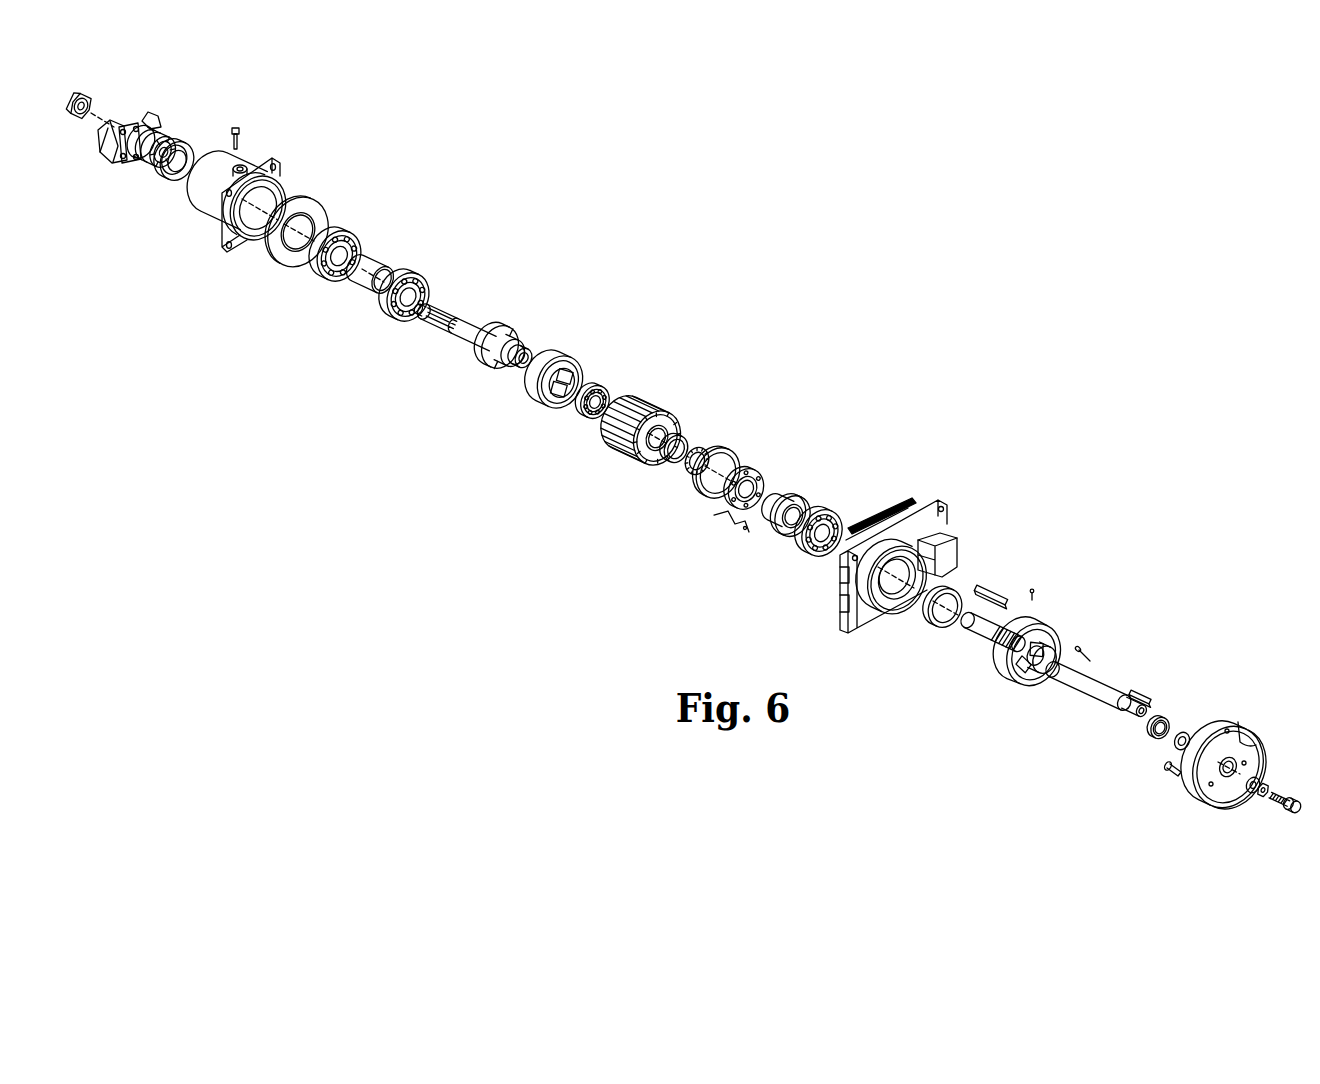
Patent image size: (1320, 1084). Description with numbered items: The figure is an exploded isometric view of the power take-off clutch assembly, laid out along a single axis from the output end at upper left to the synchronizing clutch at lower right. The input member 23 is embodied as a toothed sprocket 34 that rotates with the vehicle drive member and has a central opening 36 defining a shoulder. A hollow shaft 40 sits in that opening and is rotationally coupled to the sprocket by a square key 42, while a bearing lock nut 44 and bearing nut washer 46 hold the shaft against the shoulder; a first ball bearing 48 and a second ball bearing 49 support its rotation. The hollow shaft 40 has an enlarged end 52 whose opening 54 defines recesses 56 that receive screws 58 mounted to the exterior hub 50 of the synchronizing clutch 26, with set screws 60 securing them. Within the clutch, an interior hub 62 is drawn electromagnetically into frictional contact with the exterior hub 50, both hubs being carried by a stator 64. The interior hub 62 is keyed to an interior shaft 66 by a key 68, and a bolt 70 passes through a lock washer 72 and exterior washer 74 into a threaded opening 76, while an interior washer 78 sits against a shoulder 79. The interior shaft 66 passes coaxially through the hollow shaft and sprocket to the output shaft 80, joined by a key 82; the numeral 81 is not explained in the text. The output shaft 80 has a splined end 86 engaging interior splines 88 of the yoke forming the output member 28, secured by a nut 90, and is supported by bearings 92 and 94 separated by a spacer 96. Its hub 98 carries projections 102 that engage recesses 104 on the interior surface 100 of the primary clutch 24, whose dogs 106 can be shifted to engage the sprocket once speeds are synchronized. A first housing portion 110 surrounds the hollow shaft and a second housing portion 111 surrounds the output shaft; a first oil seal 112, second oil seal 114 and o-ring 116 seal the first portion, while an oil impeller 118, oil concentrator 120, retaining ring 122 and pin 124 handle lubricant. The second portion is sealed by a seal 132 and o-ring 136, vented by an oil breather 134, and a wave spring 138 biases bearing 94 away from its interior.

The input member 23 is at (695, 376).
The primary clutch 24 is at (571, 357).
The synchronizing clutch 26 is at (1256, 708).
The output member 28 is at (150, 116).
The sprocket 34 is at (649, 405).
The central opening 36 is at (650, 455).
The hollow shaft 40 is at (986, 634).
The key 42 is at (1000, 590).
The bearing lock nut 44 is at (686, 440).
The bearing nut washer 46 is at (690, 478).
The first ball bearing 48 is at (602, 388).
The second ball bearing 49 is at (831, 512).
The exterior hub 50 is at (1210, 740).
The enlarged end 52 is at (1048, 630).
The opening 54 is at (1034, 684).
The recesses 56 is at (1018, 686).
The screws 58 is at (1166, 772).
The set screws 60 is at (1034, 588).
The interior hub 62 is at (1200, 796).
The stator 64 is at (1262, 746).
The interior shaft 66 is at (1088, 694).
The key 68 is at (1144, 692).
The bolt 70 is at (1288, 814).
The lock washer 72 is at (1268, 787).
The exterior washer 74 is at (1250, 795).
The threaded opening 76 is at (1140, 724).
The interior washer 78 is at (1172, 748).
The shoulder 79 is at (1120, 716).
The output shaft 80 is at (484, 332).
The flange hub 81 is at (1066, 645).
The key 82 is at (1082, 654).
The splined end 86 is at (453, 312).
The interior splines 88 is at (162, 138).
The nut 90 is at (96, 97).
The bearing 92 is at (394, 316).
The bearing 94 is at (318, 275).
The spacer 96 is at (380, 266).
The hub 98 is at (508, 372).
The interior surface 100 is at (566, 406).
The projections 102 is at (512, 336).
The recesses 104 is at (556, 416).
The dogs 106 is at (546, 408).
The first housing portion 110 is at (950, 504).
The second housing portion 111 is at (208, 212).
The first oil seal 112 is at (936, 627).
The second oil seal 114 is at (1165, 720).
The o-ring 116 is at (913, 498).
The oil impeller 118 is at (776, 532).
The oil concentrator 120 is at (758, 475).
The retaining ring 122 is at (729, 456).
The pin 124 is at (728, 530).
The seal 132 is at (170, 177).
The oil breather 134 is at (240, 128).
The o-ring 136 is at (282, 266).
The wave spring 138 is at (318, 208).